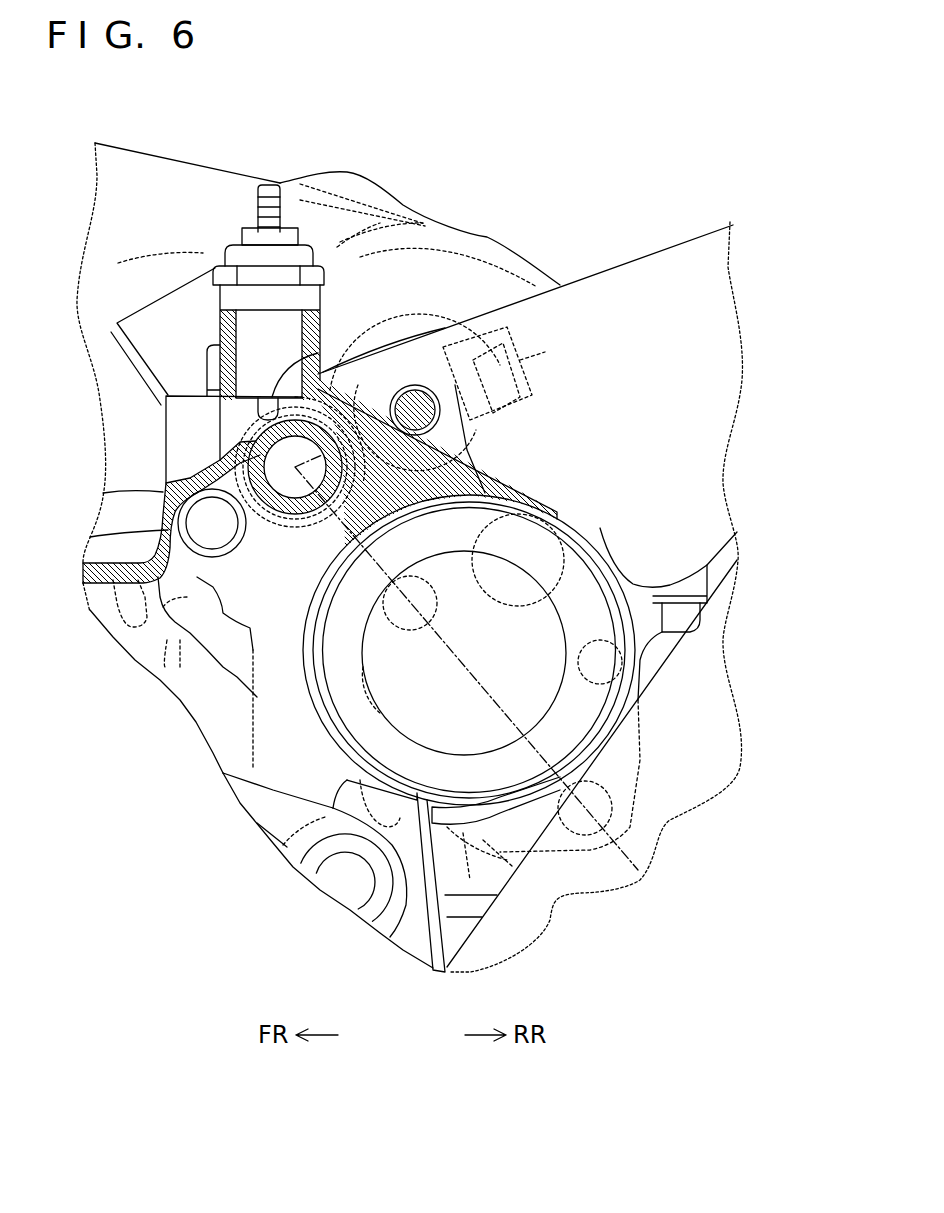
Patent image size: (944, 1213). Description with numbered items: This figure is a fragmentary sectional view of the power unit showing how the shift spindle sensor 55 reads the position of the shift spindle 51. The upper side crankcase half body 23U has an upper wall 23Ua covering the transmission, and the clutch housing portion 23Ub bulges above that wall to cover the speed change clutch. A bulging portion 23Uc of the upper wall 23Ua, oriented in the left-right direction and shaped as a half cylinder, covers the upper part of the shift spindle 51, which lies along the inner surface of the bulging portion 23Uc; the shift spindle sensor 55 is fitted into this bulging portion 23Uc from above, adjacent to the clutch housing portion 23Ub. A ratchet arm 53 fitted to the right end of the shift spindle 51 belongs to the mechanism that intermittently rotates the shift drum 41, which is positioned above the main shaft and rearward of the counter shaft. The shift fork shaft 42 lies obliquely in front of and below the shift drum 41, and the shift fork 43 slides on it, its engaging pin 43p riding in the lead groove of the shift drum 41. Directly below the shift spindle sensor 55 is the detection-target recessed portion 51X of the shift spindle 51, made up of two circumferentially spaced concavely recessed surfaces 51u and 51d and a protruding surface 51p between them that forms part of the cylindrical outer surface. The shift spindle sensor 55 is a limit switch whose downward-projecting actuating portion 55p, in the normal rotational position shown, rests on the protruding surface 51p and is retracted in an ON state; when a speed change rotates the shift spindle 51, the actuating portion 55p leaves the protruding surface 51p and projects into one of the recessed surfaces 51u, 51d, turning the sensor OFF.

The upper side crankcase half body 23U is at (163, 610).
The upper wall 23Ua is at (118, 540).
The clutch housing portion 23Ub is at (240, 170).
The bulging portion 23Uc is at (440, 347).
The shift drum 41 is at (575, 740).
The shift fork shaft 42 is at (340, 880).
The shift fork 43 is at (267, 780).
The engaging pin 43p is at (347, 790).
The shift spindle 51 is at (285, 513).
The concavely recessed surface 51d is at (200, 444).
The protruding surface 51p is at (198, 397).
The concavely recessed surface 51u is at (392, 357).
The detection-target recessed portion 51X is at (220, 427).
The ratchet arm 53 is at (538, 500).
The shift spindle sensor 55 is at (227, 247).
The actuating portion 55p is at (318, 353).